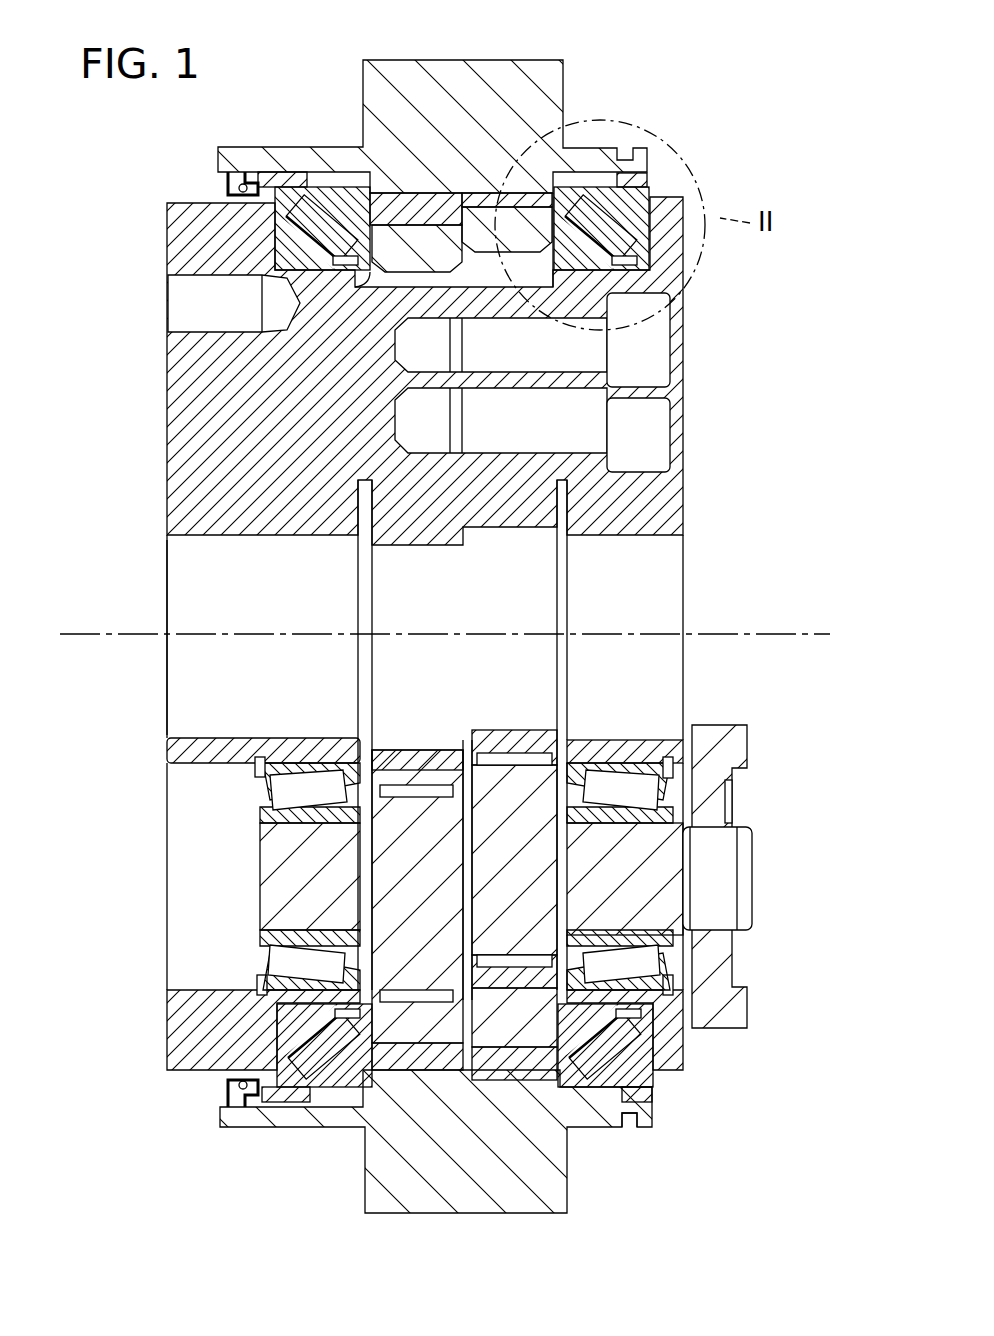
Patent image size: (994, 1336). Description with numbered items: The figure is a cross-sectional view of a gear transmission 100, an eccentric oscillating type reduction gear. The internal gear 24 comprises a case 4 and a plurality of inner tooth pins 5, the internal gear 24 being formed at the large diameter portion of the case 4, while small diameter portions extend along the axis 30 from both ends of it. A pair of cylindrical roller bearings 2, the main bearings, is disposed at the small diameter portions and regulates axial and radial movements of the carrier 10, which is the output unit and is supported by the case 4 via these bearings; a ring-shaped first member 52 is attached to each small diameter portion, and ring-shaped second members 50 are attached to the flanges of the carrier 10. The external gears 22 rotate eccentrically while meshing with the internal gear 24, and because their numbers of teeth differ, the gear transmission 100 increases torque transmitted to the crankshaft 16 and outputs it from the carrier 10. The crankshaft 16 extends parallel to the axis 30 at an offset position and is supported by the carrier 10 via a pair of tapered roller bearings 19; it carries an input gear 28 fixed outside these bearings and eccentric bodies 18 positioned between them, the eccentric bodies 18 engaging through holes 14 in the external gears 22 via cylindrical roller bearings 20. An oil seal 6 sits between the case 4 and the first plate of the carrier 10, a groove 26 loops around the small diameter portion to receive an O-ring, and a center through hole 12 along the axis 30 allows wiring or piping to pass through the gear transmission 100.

The gear transmission 100 is at (822, 52).
The cylindrical roller bearings 2 is at (310, 175).
The case 4 is at (510, 70).
The inner tooth pins 5 is at (443, 193).
The oil seal 6 is at (227, 172).
The carrier 10 is at (180, 242).
The center through hole 12 is at (158, 590).
The through holes 14 is at (507, 765).
The crankshaft 16 is at (403, 913).
The eccentric bodies 18 is at (503, 912).
The tapered roller bearings 19 is at (290, 953).
The cylindrical roller bearings 20 is at (397, 975).
The external gears 22 is at (495, 1030).
The internal gear 24 is at (508, 1086).
The groove 26 is at (627, 1127).
The input gear 28 is at (735, 745).
The axis 30 is at (790, 637).
The second member 50 is at (290, 1050).
The first member 52 is at (232, 1092).